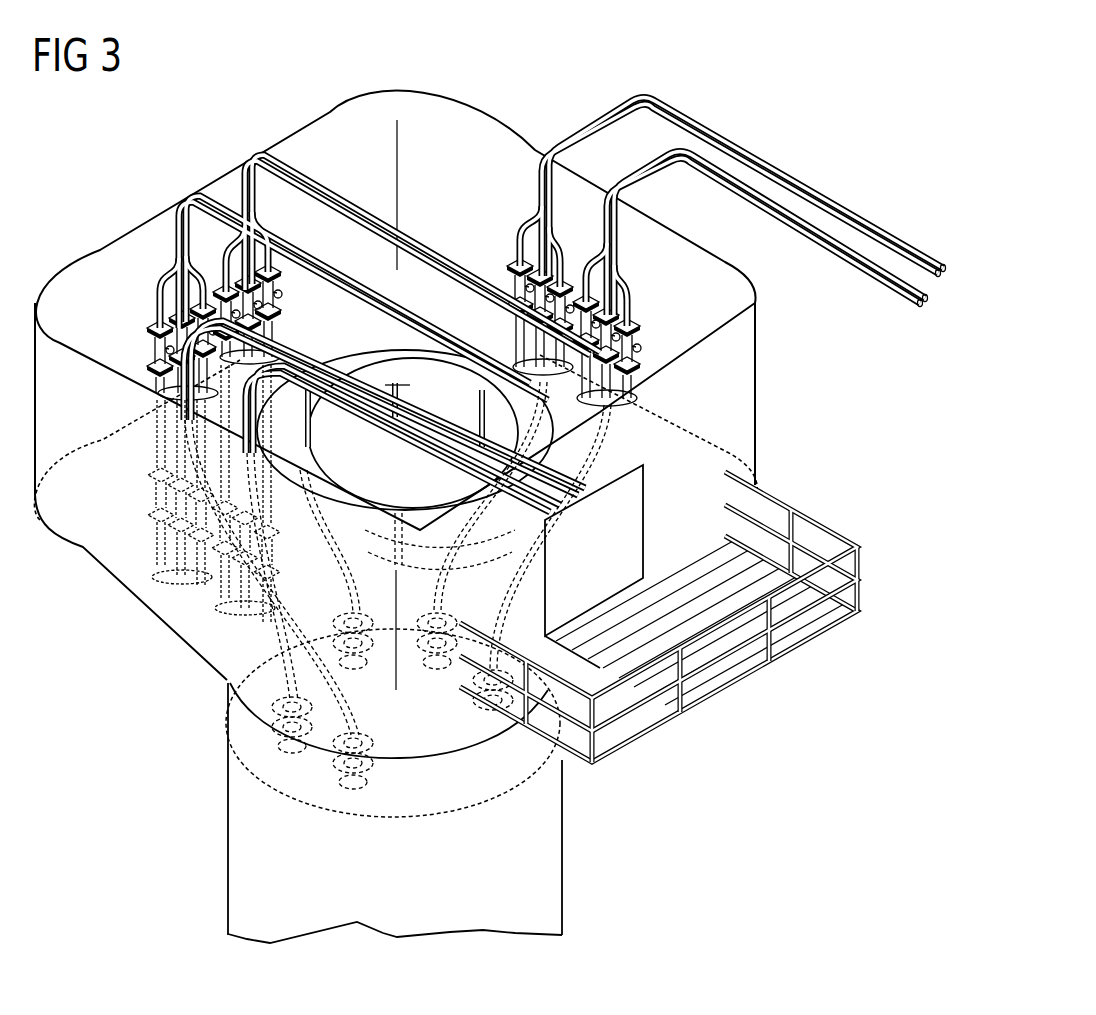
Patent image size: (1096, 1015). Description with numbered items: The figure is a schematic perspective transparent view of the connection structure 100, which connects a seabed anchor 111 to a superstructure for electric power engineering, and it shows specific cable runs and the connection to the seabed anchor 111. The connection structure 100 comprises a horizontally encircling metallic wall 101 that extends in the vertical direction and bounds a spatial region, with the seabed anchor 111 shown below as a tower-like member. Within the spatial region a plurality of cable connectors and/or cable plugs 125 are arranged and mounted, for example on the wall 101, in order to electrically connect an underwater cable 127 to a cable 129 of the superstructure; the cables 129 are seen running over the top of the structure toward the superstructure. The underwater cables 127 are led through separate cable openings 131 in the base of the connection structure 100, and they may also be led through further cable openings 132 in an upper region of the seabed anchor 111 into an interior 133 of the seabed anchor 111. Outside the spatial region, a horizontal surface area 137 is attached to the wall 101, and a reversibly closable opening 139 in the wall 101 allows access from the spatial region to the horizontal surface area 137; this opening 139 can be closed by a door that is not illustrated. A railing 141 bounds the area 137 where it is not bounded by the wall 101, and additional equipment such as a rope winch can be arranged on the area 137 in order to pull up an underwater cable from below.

The connection structure 100 is at (490, 510).
The wall 101 is at (110, 540).
The seabed anchor 111 is at (548, 876).
The cable connectors and/or cable plugs 125 is at (128, 350).
The underwater cable 127 is at (300, 474).
The cable of the superstructure 129 is at (182, 268).
The cable openings 131 is at (152, 432).
The further cable openings 132 is at (372, 770).
The interior of the seabed anchor 133 is at (416, 901).
The horizontal surface area 137 is at (838, 622).
The opening 139 is at (648, 523).
The railing 141 is at (858, 578).